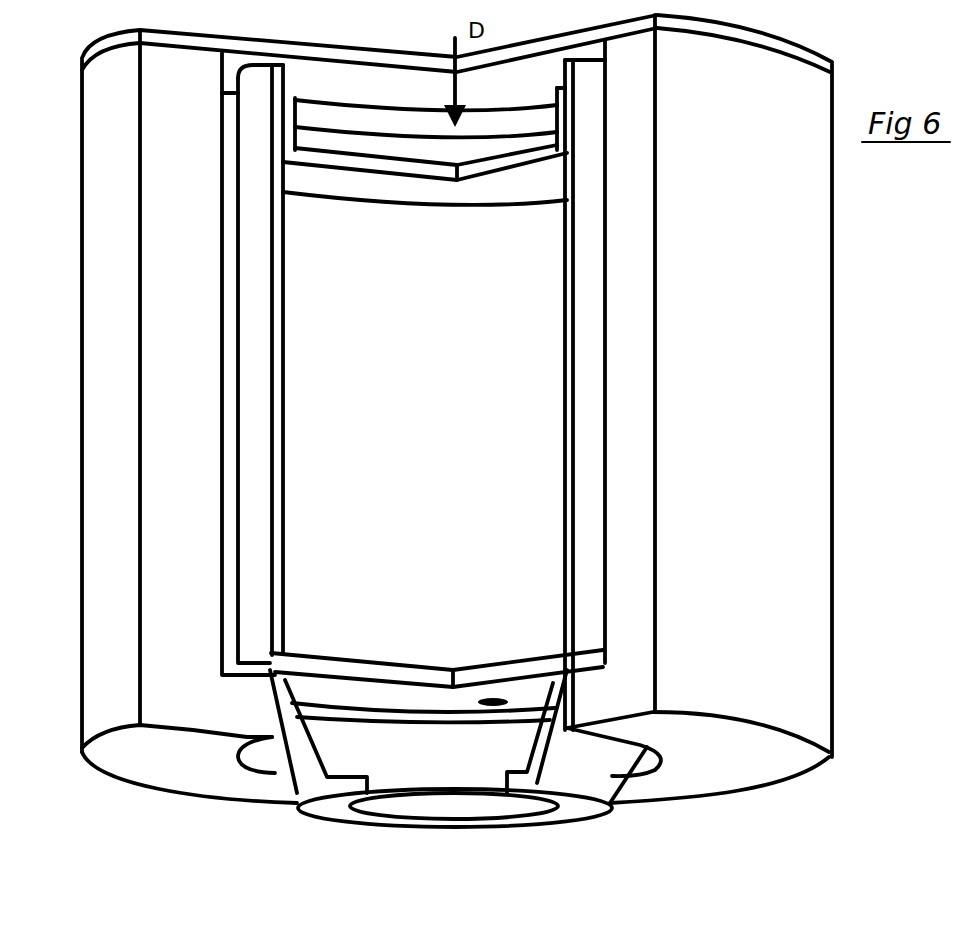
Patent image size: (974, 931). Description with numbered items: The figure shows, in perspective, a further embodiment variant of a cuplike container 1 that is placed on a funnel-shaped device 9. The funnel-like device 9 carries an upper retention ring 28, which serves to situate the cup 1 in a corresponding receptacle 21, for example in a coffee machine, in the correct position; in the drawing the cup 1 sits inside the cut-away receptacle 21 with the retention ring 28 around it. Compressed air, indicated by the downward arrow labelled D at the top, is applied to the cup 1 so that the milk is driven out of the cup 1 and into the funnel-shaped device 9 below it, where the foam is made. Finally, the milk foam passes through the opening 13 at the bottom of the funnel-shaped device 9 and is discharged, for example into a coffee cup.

The cuplike container 1 is at (590, 253).
The funnel-shaped device 9 is at (608, 767).
The opening 13 is at (560, 825).
The receptacle 21 is at (797, 393).
The upper retention ring 28 is at (580, 660).